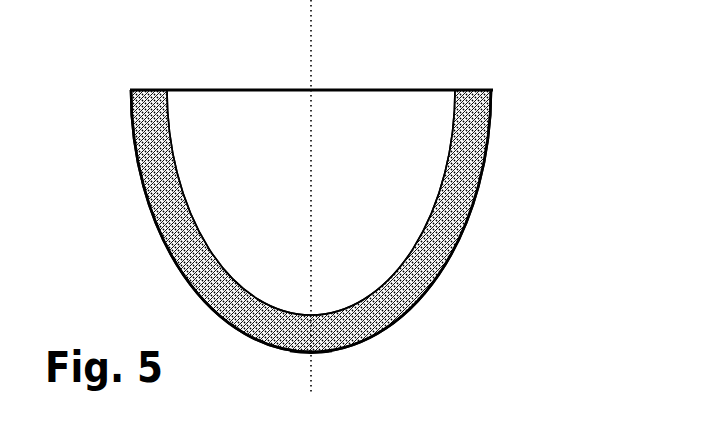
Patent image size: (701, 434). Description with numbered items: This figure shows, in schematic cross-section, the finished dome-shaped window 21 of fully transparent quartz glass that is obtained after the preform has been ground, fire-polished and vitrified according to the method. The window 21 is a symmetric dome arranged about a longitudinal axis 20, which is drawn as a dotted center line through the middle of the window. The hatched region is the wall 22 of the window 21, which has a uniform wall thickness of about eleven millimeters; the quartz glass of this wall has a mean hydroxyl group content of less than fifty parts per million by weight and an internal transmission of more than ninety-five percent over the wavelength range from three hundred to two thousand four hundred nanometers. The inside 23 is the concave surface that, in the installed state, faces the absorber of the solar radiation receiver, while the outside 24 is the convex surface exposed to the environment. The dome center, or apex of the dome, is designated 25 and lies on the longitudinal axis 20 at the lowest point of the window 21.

The longitudinal axis 20 is at (311, 35).
The window 21 is at (503, 188).
The wall 22 is at (445, 228).
The inside 23 is at (183, 275).
The outside 24 is at (328, 243).
The apex of the dome 25 is at (310, 352).